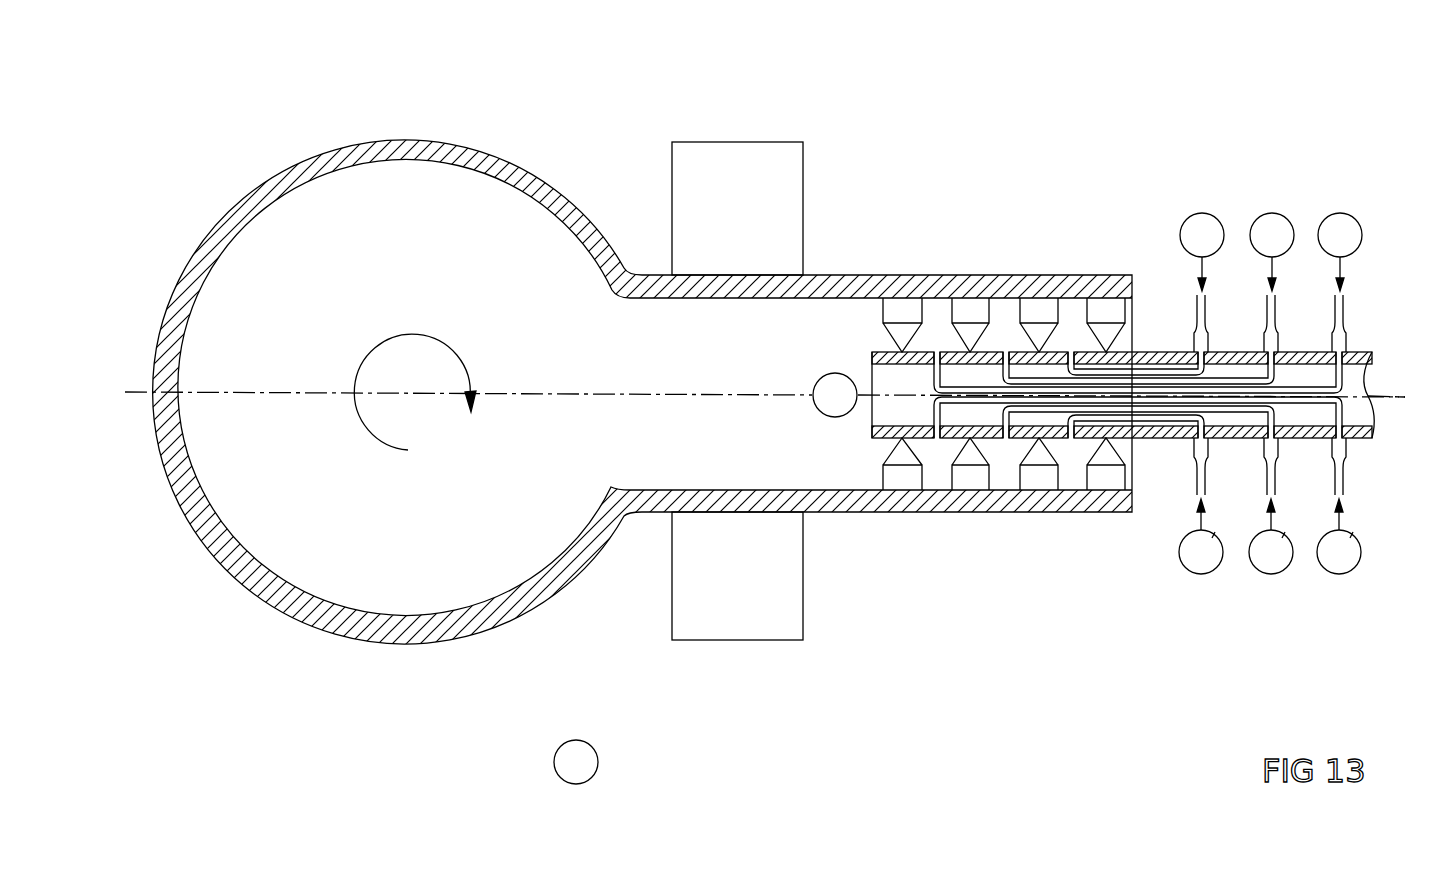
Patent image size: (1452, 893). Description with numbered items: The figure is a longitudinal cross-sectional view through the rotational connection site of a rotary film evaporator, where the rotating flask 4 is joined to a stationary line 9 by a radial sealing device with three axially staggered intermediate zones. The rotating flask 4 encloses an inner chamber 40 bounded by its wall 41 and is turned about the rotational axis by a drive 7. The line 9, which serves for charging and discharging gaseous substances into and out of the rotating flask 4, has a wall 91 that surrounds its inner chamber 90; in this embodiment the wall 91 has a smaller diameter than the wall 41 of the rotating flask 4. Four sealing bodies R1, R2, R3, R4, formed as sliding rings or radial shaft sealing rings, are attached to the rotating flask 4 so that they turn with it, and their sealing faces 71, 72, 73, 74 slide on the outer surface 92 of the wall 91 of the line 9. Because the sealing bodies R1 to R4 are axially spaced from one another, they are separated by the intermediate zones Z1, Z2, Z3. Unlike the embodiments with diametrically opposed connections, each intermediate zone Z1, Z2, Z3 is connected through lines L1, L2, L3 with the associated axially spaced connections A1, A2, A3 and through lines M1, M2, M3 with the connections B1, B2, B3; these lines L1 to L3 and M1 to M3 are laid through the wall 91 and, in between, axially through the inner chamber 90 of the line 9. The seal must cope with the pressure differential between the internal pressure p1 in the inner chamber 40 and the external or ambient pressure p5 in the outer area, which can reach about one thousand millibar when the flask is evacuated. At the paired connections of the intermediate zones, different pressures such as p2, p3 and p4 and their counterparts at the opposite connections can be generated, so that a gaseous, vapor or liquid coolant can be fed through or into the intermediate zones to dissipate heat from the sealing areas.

The rotating flask 4 is at (642, 380).
The inner chamber of the rotating flask 40 is at (547, 240).
The drive 7 is at (757, 148).
The wall of the rotating flask 41 is at (737, 512).
The line 9 is at (1138, 399).
The inner chamber of the line 90 is at (1407, 395).
The wall of the line 91 is at (1362, 352).
The outer surface of the wall of the line 92 is at (882, 352).
The sealing face 71 is at (1115, 536).
The sealing face 72 is at (1023, 534).
The sealing face 73 is at (959, 533).
The sealing face 74 is at (875, 534).
The sealing body R1 is at (1110, 442).
The sealing body R2 is at (1042, 485).
The sealing body R3 is at (967, 483).
The sealing body R4 is at (903, 482).
The intermediate zone Z1 is at (1075, 315).
The intermediate zone Z2 is at (1007, 317).
The intermediate zone Z3 is at (933, 317).
The line L1 is at (1072, 357).
The line L2 is at (1006, 357).
The line L3 is at (933, 383).
The line M1 is at (1073, 440).
The line M2 is at (1005, 440).
The line M3 is at (935, 441).
The connection A1 is at (1194, 326).
The connection A2 is at (1264, 326).
The connection A3 is at (1332, 331).
The connection B1 is at (1194, 458).
The connection B2 is at (1264, 458).
The connection B3 is at (1332, 458).
The internal pressure p1 is at (835, 395).
The pressure p2 is at (1339, 393).
The pressure p3 is at (1271, 393).
The pressure p4 is at (1201, 393).
The external pressure p5 is at (576, 762).